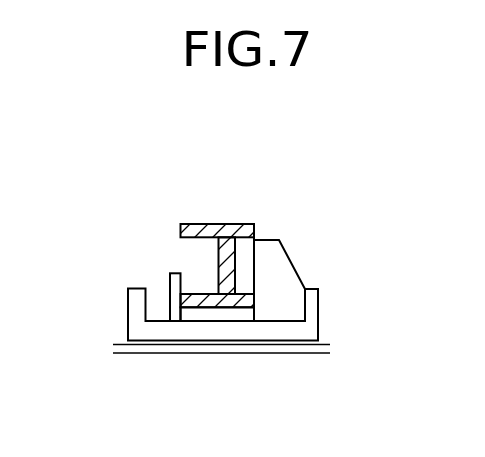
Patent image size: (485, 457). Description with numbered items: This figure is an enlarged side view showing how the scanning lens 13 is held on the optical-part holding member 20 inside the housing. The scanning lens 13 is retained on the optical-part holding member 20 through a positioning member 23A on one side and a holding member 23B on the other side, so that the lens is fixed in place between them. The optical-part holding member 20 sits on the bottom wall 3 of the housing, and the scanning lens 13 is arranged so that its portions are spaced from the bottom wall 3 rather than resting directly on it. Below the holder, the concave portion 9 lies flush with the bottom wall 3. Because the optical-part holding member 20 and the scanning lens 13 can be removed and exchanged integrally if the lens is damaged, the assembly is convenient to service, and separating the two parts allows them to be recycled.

The bottom wall 3 is at (280, 348).
The concave portion 9 is at (158, 342).
The scanning lens 13 is at (218, 224).
The optical-part holding member 20 is at (311, 304).
The positioning member 23A is at (291, 262).
The holding member 23B is at (170, 283).